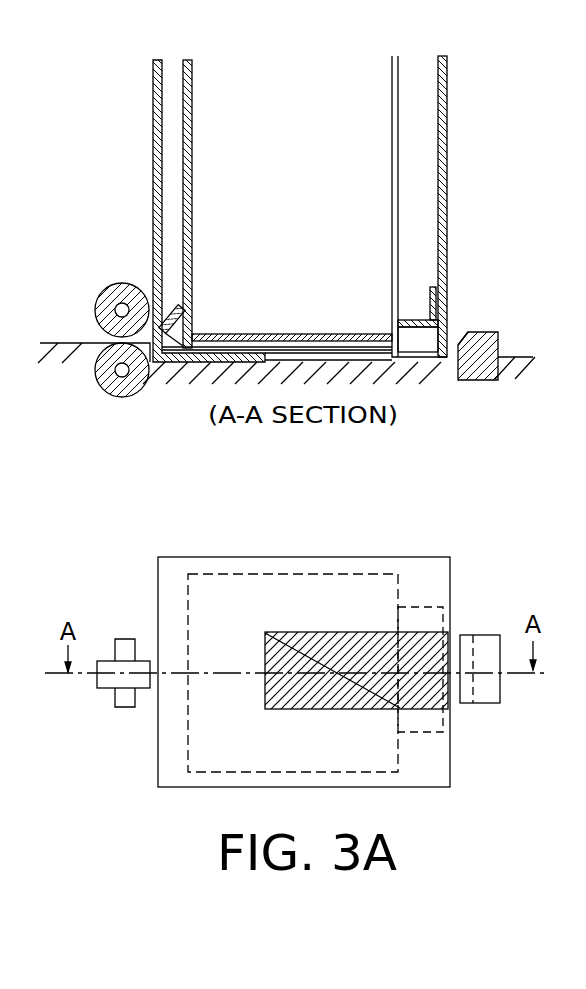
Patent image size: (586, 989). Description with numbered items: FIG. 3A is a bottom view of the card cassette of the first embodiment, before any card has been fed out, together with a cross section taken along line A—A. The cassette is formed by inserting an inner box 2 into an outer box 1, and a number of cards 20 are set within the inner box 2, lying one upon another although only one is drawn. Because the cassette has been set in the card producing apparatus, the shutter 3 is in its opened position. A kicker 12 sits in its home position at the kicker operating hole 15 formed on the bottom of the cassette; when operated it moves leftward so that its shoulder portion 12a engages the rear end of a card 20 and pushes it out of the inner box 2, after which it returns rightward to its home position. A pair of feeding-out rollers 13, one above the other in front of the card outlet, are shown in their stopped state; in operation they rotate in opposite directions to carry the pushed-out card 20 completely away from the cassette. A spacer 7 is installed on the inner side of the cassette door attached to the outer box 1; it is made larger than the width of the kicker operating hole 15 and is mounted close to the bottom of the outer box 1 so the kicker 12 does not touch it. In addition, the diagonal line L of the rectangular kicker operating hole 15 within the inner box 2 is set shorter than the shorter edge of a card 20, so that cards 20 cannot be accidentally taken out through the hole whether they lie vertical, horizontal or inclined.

The outer box 1 is at (153, 95).
The inner box 2 is at (184, 175).
The shutter 3 is at (170, 308).
The spacer 7 is at (408, 320).
The kicker 12 is at (498, 336).
The shoulder portion 12a is at (461, 338).
The feeding-out rollers 13 is at (108, 290).
The kicker operating hole 15 is at (292, 340).
The card 20 is at (327, 334).
The diagonal line L is at (350, 690).